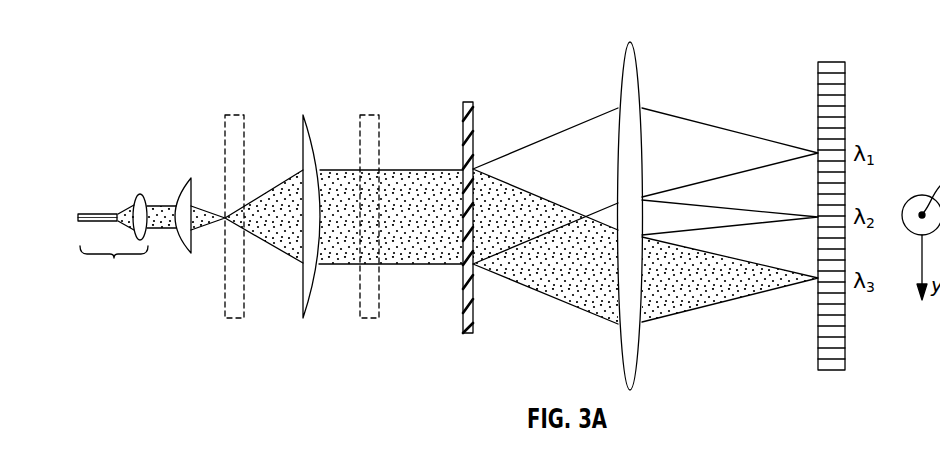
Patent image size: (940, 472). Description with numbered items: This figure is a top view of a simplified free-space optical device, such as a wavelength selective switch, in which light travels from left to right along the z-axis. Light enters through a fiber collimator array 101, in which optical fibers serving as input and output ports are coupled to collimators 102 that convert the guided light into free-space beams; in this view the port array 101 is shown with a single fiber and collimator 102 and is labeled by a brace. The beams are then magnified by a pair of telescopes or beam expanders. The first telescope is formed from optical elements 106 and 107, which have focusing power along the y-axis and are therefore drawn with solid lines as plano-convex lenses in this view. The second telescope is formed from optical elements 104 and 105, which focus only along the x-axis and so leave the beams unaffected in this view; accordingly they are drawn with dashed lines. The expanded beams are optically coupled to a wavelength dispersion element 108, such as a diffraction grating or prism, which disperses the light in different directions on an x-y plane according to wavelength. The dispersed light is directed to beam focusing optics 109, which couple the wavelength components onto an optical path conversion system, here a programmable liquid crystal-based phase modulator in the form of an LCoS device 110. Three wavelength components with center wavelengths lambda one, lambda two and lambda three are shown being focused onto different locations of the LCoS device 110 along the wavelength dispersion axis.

The fiber collimator array 101 is at (99, 212).
The collimator 102 is at (137, 194).
The optical element 104 is at (228, 320).
The optical element 105 is at (364, 320).
The optical element 106 is at (187, 180).
The optical element 107 is at (303, 115).
The wavelength dispersion element 108 is at (466, 102).
The beam focusing optics 109 is at (622, 78).
The LCoS device 110 is at (828, 62).